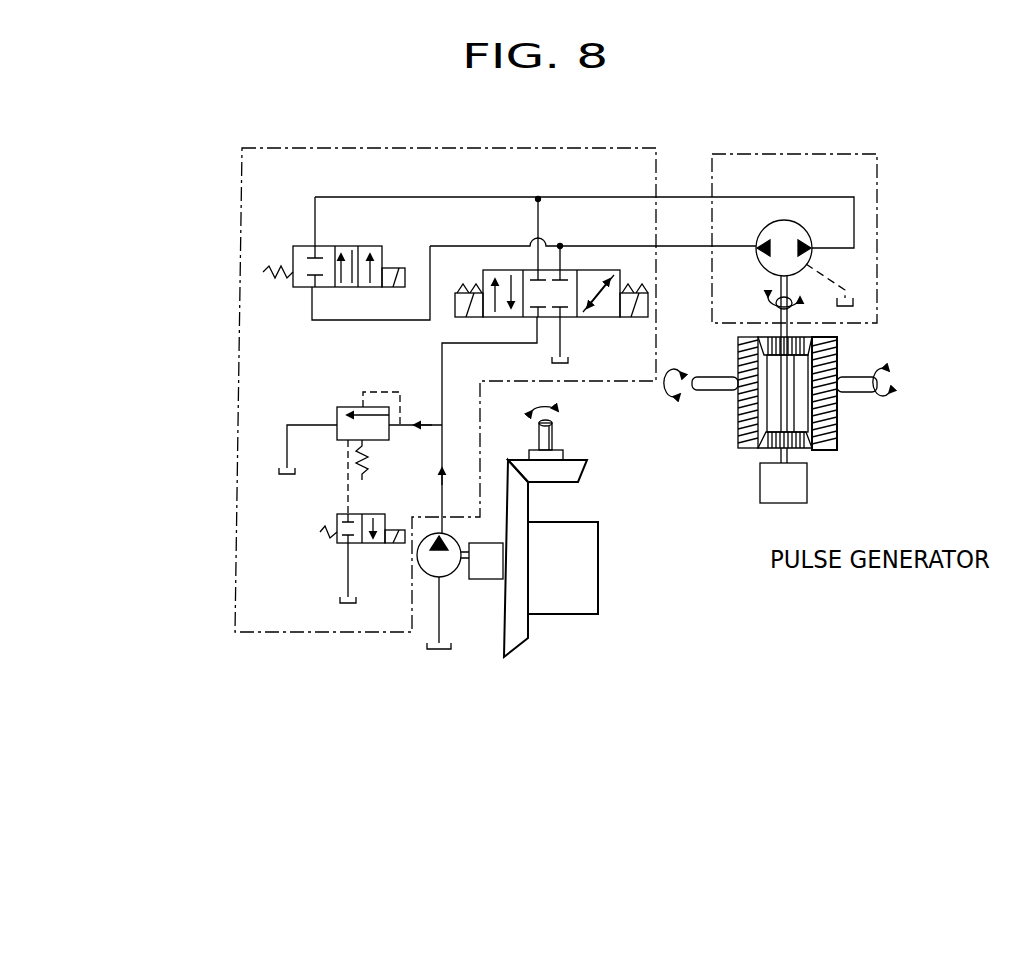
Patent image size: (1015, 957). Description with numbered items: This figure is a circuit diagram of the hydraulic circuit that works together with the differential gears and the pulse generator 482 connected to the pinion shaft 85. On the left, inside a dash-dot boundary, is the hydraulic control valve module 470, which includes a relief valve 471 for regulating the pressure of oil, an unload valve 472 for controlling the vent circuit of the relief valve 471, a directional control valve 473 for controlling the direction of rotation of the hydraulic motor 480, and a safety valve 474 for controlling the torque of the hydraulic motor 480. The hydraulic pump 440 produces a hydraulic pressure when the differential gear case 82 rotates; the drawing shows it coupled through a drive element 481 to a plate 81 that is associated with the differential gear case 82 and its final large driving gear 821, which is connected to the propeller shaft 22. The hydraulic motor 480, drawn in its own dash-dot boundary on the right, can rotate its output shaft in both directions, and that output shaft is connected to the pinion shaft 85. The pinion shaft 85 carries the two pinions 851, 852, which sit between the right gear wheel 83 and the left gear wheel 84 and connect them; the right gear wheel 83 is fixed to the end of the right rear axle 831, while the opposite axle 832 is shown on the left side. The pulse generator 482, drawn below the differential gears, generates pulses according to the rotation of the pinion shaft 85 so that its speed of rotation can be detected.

The propeller shaft 22 is at (552, 433).
The wedge member 81 is at (575, 470).
The differential gear case 82 is at (590, 552).
The right gear wheel 83 is at (830, 410).
The left gear wheel 84 is at (738, 428).
The pinion shaft 85 is at (800, 440).
The hydraulic pump 440 is at (450, 572).
The hydraulic control valve module 470 is at (235, 632).
The relief valve 471 is at (345, 424).
The unload valve 472 is at (368, 545).
The directional control valve 473 is at (472, 318).
The safety valve 474 is at (372, 252).
The hydraulic motor 480 is at (878, 154).
The pump drive 481 is at (490, 580).
The pulse generator 482 is at (780, 503).
The final large driving gear 821 is at (518, 628).
The right rear axle 831 is at (860, 390).
The left shaft 832 is at (712, 386).
The pinion 851 is at (800, 452).
The pinion 852 is at (805, 340).